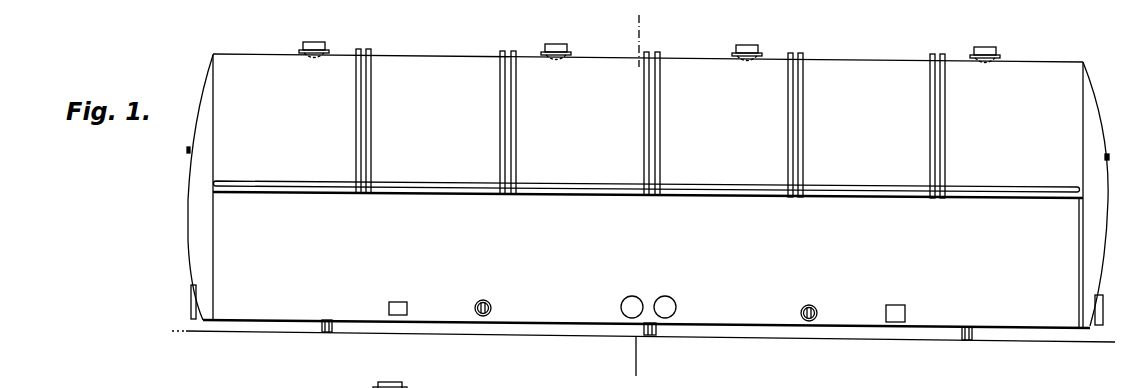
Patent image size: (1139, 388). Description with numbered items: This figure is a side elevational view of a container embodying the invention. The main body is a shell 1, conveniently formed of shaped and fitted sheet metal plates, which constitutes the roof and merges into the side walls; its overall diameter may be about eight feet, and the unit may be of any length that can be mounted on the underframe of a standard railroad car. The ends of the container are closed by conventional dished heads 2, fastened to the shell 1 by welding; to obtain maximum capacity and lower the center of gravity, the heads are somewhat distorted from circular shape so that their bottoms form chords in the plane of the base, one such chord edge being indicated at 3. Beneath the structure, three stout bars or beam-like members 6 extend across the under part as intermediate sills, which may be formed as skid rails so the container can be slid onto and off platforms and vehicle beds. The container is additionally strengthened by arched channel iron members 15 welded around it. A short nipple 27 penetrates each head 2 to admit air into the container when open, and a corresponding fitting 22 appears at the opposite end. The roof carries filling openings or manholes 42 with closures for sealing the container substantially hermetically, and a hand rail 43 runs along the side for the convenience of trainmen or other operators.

The shell 1 is at (441, 52).
The dished heads 2 is at (188, 187).
The chord edge of a head 3 is at (632, 26).
The beam-like members 6 is at (333, 333).
The arched channel iron members 15 is at (499, 148).
The right end bracket 22 is at (1104, 317).
The short nipple 27 is at (190, 302).
The filling openings or manholes 42 is at (333, 33).
The hand rail 43 is at (692, 187).